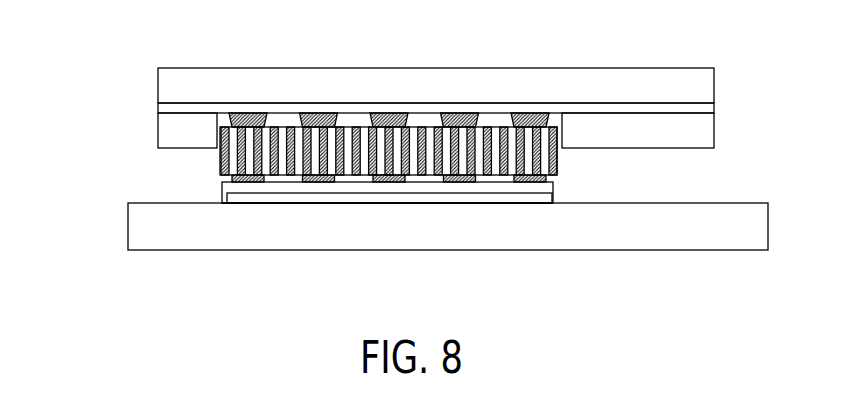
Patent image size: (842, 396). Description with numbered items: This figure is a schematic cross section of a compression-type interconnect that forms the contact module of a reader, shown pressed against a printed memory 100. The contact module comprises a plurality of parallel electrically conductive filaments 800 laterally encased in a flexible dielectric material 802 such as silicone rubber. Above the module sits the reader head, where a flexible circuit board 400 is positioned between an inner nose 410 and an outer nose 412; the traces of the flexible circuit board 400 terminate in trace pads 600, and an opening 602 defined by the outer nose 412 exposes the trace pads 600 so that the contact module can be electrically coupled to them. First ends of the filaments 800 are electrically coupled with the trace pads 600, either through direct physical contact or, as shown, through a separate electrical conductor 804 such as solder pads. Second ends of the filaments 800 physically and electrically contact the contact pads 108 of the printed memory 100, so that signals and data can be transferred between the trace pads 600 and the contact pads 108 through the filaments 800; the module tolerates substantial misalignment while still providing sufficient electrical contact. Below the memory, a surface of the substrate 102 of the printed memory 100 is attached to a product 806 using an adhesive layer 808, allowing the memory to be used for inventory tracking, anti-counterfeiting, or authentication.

The printed memory 100 is at (135, 188).
The substrate 102 is at (225, 204).
The contact pads 108 is at (458, 178).
The flexible circuit board 400 is at (703, 110).
The inner nose 410 is at (693, 78).
The outer nose 412 is at (168, 133).
The trace pads 600 is at (473, 125).
The opening 602 is at (561, 173).
The filaments 800 is at (226, 157).
The flexible dielectric material 802 is at (297, 183).
The electrical conductor 804 is at (258, 116).
The product 806 is at (683, 250).
The adhesive layer 808 is at (363, 197).